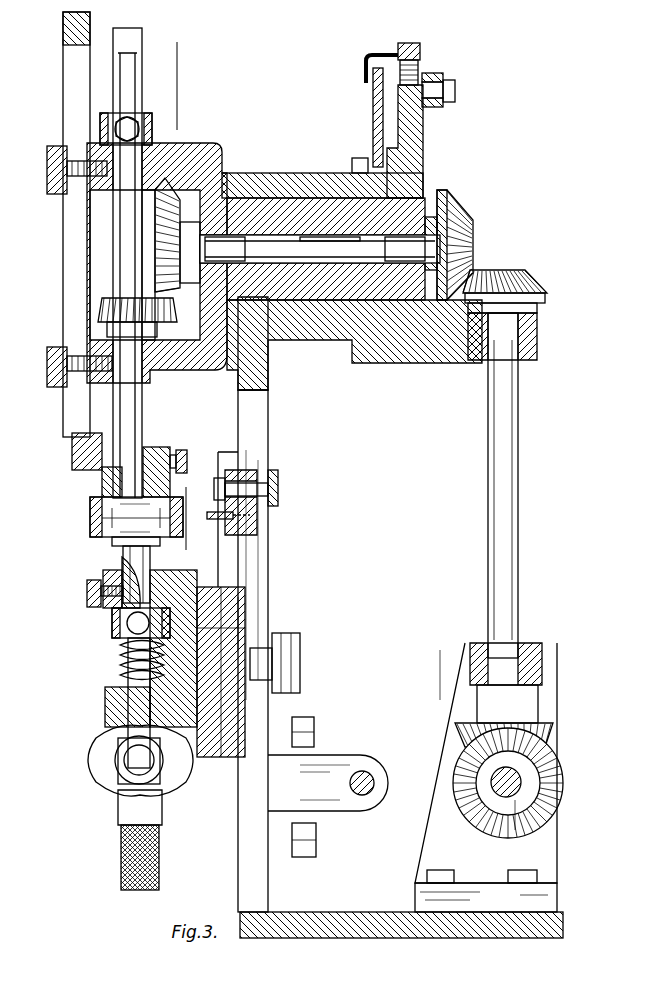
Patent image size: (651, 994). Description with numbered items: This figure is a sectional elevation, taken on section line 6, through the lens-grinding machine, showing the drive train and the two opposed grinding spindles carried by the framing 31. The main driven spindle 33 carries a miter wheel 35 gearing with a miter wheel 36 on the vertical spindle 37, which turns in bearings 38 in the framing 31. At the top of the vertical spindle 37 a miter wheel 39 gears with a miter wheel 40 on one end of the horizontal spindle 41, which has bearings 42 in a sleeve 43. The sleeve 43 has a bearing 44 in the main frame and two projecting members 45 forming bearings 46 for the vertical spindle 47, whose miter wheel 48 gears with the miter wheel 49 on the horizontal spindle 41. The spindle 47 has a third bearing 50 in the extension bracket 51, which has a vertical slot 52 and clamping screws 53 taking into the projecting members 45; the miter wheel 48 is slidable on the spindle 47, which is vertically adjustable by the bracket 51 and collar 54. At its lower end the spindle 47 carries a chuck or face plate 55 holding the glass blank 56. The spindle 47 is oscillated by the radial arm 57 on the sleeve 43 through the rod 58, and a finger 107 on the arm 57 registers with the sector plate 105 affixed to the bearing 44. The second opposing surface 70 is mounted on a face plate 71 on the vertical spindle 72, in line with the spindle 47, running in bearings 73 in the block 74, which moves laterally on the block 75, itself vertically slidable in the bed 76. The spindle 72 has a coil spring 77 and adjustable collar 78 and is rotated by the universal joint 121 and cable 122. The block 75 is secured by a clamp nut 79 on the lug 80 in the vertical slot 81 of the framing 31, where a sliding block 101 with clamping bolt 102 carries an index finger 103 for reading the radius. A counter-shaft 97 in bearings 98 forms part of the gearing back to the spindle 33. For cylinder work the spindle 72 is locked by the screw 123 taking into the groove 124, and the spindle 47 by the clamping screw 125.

The section line 6- 6 is at (189, 296).
The framing 31 is at (384, 364).
The main driven spindle 33 is at (540, 780).
The miter wheel 35 is at (470, 752).
The miter wheel 36 is at (460, 727).
The vertical spindle 37 is at (498, 516).
The bearings 38 is at (480, 340).
The miter wheel 39 is at (500, 278).
The miter wheel 40 is at (474, 232).
The horizontal spindle 41 is at (320, 249).
The bearings 42 is at (315, 249).
The sleeve 43 is at (330, 247).
The bearing 44 is at (263, 195).
The projecting members 45 is at (186, 142).
The bearings 46 is at (178, 386).
The vertical spindle 47 is at (119, 258).
The miter wheel 48 is at (102, 303).
The miter wheel 49 is at (156, 231).
The third bearing 50 is at (102, 478).
The extension bracket 51 is at (72, 445).
The vertical slot 52 is at (79, 224).
The clamping screws 53 is at (58, 183).
The collar 54 is at (133, 118).
The chuck or face plate 55 is at (91, 507).
The blank of glass 56 is at (135, 508).
The radial arm 57 is at (424, 131).
The rod 58 is at (436, 74).
The second opposing surface 70 is at (136, 525).
The face plate 71 is at (112, 541).
The vertical spindle 72 is at (150, 560).
The bearings 73 is at (170, 583).
The block 74 is at (150, 672).
The block 75 is at (215, 630).
The bed 76 is at (233, 577).
The coil spring 77 is at (122, 666).
The adjustable collar 78 is at (112, 626).
The clamp nut 79 is at (300, 650).
The lug 80 is at (272, 666).
The vertical slot 81 is at (252, 622).
The counter-shaft or spindle 97 is at (368, 772).
The bearings 98 is at (328, 783).
The sliding block 101 is at (258, 527).
The clamping bolt 102 is at (278, 487).
The index finger 103 is at (212, 514).
The sector plate 105 is at (373, 116).
The finger 107 is at (364, 71).
The universal joint 121 is at (166, 770).
The cable 122 is at (160, 856).
The screw 123 is at (87, 590).
The groove 124 is at (103, 571).
The clamping screw 125 is at (180, 450).